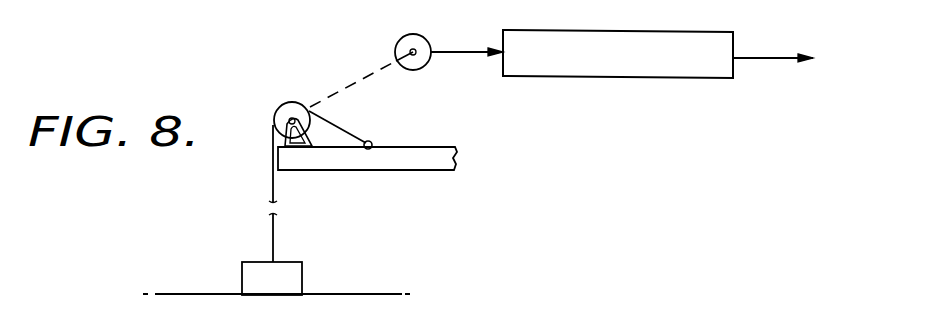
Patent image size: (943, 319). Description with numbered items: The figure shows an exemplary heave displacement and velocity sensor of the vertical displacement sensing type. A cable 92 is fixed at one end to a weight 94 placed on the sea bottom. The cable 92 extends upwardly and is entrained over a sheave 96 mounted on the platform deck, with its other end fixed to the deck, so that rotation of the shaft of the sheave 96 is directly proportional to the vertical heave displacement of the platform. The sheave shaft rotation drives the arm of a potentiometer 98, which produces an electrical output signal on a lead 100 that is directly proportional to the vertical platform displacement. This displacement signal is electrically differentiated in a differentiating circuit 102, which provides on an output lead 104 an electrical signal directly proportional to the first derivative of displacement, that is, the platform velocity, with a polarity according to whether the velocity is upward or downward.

The cable 92 is at (273, 223).
The weight 94 is at (293, 262).
The sheave 96 is at (288, 110).
The potentiometer 98 is at (411, 34).
The lead 100 is at (472, 52).
The differentiating circuit 102 is at (558, 30).
The output lead 104 is at (764, 56).